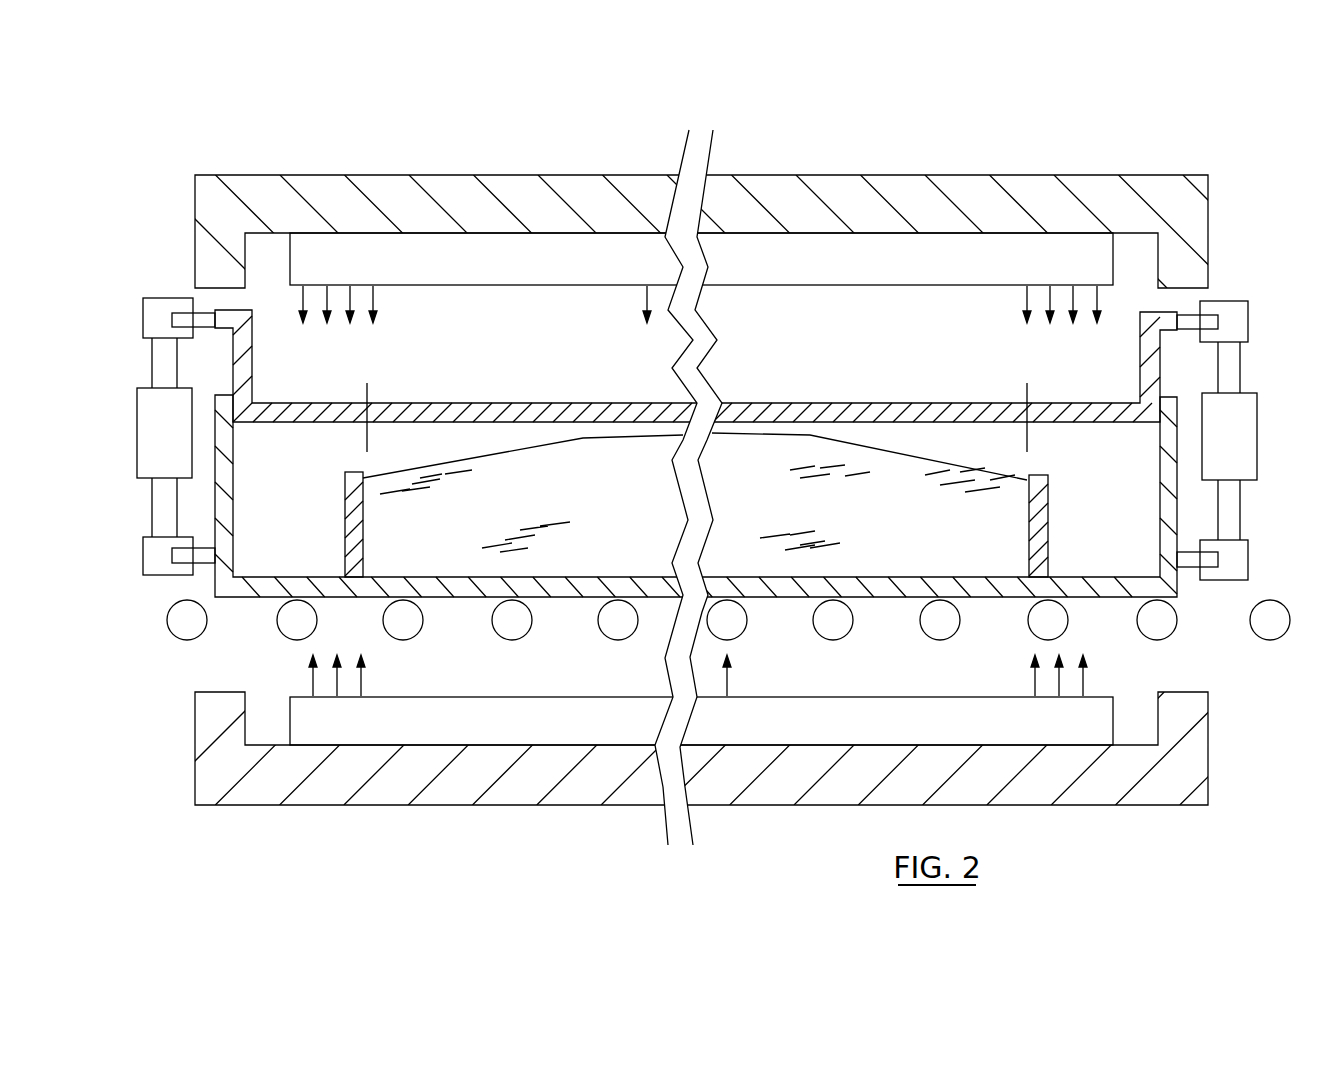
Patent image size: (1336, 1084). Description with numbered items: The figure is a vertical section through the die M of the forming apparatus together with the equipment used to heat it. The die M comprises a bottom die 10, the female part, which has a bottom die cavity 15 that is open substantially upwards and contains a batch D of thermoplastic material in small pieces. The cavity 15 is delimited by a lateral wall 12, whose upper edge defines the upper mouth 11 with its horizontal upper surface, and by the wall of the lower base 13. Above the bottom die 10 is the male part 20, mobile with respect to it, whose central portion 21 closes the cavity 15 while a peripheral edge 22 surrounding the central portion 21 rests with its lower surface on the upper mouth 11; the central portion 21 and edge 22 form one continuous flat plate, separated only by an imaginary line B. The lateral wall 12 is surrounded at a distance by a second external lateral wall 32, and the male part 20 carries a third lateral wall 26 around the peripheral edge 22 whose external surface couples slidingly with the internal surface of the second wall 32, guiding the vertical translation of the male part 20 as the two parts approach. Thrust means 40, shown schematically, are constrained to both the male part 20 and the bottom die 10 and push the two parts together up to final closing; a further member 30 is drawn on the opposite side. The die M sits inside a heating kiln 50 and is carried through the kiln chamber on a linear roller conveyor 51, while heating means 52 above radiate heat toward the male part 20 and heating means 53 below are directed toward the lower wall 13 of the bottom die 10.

The bottom die 10 is at (706, 542).
The upper mouth 11 is at (355, 470).
The lateral wall 12 is at (355, 517).
The lower base wall 13 is at (450, 598).
The bottom die cavity 15 is at (882, 480).
The male part 20 is at (651, 276).
The central portion 21 is at (607, 412).
The peripheral edge 22 is at (287, 407).
The third lateral wall 26 is at (243, 360).
The right side support 30 is at (1177, 513).
The second external lateral wall 32 is at (220, 497).
The thrust means 40 is at (155, 423).
The heating kiln 50 is at (372, 807).
The linear roller conveyor 51 is at (832, 645).
The heating means 52 is at (843, 255).
The heating means 53 is at (566, 735).
The imaginary line B is at (372, 390).
The batch of thermoplastic material D is at (782, 453).
The die M is at (1170, 385).